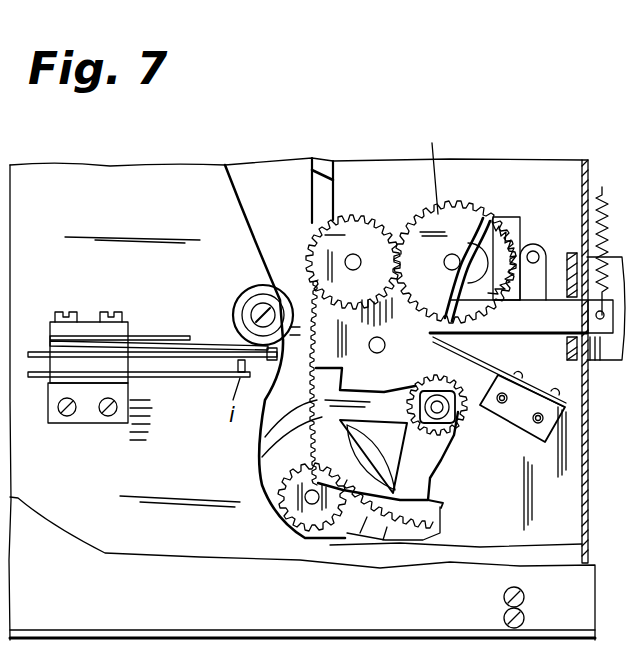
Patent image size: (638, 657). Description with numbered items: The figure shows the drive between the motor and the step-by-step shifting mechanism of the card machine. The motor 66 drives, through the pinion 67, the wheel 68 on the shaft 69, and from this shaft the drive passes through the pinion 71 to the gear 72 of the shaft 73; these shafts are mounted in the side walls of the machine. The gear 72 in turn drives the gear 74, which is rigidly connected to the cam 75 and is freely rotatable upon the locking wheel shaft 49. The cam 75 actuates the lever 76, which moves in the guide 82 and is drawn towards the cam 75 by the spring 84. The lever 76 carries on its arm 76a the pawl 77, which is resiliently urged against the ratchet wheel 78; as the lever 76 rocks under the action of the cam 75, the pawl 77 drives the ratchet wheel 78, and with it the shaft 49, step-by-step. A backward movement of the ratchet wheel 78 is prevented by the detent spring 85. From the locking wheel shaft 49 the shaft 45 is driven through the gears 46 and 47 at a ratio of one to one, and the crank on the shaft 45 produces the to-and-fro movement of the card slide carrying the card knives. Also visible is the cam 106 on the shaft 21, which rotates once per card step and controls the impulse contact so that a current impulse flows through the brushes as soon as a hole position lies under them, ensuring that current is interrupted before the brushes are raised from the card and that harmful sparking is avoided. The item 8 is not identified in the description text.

The block 8 is at (612, 308).
The shaft 21 is at (257, 304).
The shaft 45 is at (322, 238).
The gear 46 is at (357, 232).
The gear 47 is at (428, 164).
The locking wheel shaft 49 is at (453, 250).
The motor 66 is at (272, 483).
The pinion 67 is at (311, 532).
The wheel 68 is at (404, 522).
The shaft 69 is at (441, 415).
The pinion 71 is at (463, 413).
The gear 72 is at (382, 385).
The shaft 73 is at (372, 351).
The gear 74 is at (415, 218).
The cam 75 is at (472, 282).
The lever 76 is at (548, 320).
The arm 76a is at (538, 282).
The pawl 77 is at (514, 218).
The ratchet wheel 78 is at (494, 218).
The guide 82 is at (576, 252).
The spring 84 is at (603, 196).
The detent spring 85 is at (500, 376).
The cam 106 is at (238, 310).